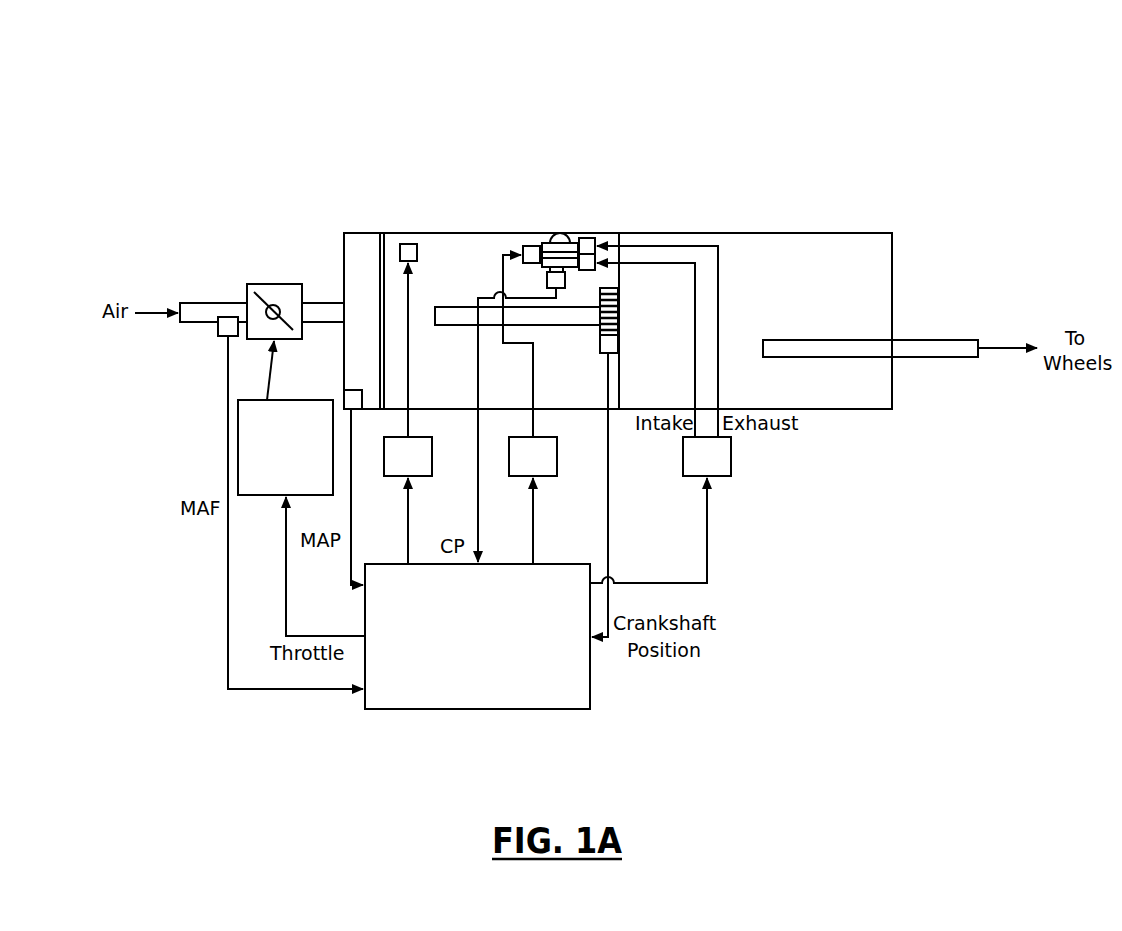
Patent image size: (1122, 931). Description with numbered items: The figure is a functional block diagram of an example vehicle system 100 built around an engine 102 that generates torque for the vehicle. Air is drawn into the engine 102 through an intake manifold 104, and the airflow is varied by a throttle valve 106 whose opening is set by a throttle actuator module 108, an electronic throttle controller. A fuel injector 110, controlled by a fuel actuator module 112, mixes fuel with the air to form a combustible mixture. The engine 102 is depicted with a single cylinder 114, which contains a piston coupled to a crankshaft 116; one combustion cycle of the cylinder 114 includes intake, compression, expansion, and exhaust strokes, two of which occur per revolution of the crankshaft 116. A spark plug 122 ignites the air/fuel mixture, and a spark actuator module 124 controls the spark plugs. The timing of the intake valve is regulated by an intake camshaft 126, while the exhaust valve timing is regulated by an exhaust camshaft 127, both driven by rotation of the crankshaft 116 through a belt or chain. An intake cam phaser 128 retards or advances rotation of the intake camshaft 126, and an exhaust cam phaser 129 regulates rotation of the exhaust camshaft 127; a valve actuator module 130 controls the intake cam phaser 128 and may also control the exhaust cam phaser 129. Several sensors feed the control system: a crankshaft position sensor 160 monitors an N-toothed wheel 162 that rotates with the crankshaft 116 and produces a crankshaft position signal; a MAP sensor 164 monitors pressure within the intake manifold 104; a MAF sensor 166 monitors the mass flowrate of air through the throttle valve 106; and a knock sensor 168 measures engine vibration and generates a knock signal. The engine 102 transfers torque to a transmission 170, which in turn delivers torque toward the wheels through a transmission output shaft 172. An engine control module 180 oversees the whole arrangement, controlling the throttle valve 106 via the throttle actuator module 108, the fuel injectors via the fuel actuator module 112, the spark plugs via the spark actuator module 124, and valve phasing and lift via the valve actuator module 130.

The vehicle system 100 is at (886, 85).
The engine 102 is at (483, 233).
The intake manifold 104 is at (368, 233).
The throttle valve 106 is at (278, 284).
The throttle actuator module 108 is at (238, 438).
The fuel injector 110 is at (405, 244).
The fuel actuator module 112 is at (417, 477).
The cylinder 114 is at (573, 241).
The crankshaft 116 is at (458, 325).
The spark plug 122 is at (531, 246).
The spark actuator module 124 is at (552, 477).
The intake camshaft 126 is at (568, 269).
The exhaust camshaft 127 is at (580, 238).
The intake cam phaser 128 is at (597, 270).
The exhaust cam phaser 129 is at (622, 246).
The valve actuator module 130 is at (726, 477).
The crankshaft position sensor 160 is at (602, 353).
The N-toothed wheel 162 is at (600, 331).
The manifold absolute pressure (MAP) sensor 164 is at (344, 393).
The mass air flowrate (MAF) sensor 166 is at (218, 327).
The knock sensor 168 is at (547, 283).
The transmission 170 is at (746, 233).
The transmission output shaft 172 is at (832, 340).
The engine control module (ECM) 180 is at (478, 710).